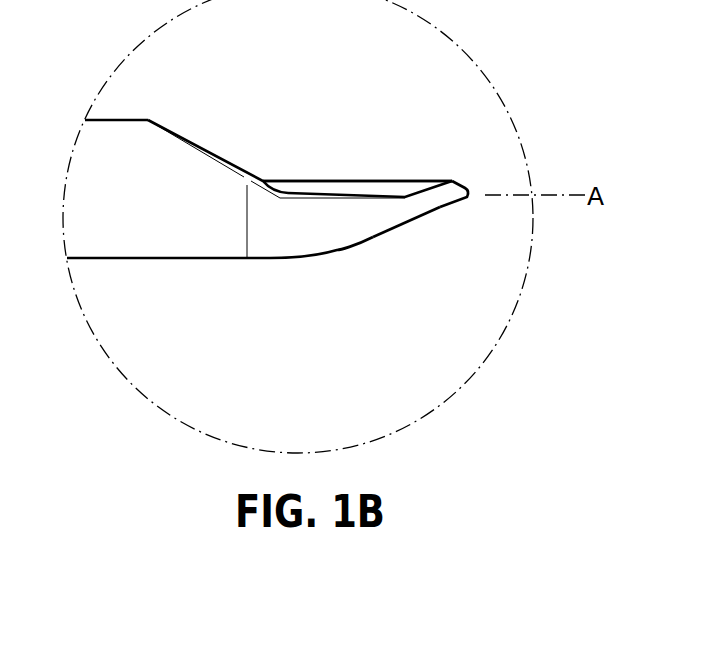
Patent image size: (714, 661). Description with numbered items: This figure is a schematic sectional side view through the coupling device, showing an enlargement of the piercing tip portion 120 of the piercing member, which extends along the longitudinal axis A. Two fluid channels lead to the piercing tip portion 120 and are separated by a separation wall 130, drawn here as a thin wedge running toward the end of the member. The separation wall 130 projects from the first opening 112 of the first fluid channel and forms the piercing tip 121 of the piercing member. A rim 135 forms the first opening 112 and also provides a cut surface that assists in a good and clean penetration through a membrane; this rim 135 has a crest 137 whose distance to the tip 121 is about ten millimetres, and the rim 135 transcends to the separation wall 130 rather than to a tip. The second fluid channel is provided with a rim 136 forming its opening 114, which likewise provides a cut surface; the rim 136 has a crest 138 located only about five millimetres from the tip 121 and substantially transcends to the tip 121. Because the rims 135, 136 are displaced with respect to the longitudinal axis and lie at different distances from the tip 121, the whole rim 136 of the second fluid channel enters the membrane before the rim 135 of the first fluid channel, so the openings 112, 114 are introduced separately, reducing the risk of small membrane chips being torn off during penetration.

The piercing tip portion 120 is at (381, 133).
The crest 137 is at (148, 120).
The first opening 112 is at (184, 144).
The rim 135 is at (223, 157).
The separation wall 130 is at (403, 178).
The piercing tip 121 is at (471, 197).
The rim 136 is at (397, 225).
The first opening 114 is at (373, 237).
The crest 138 is at (337, 250).